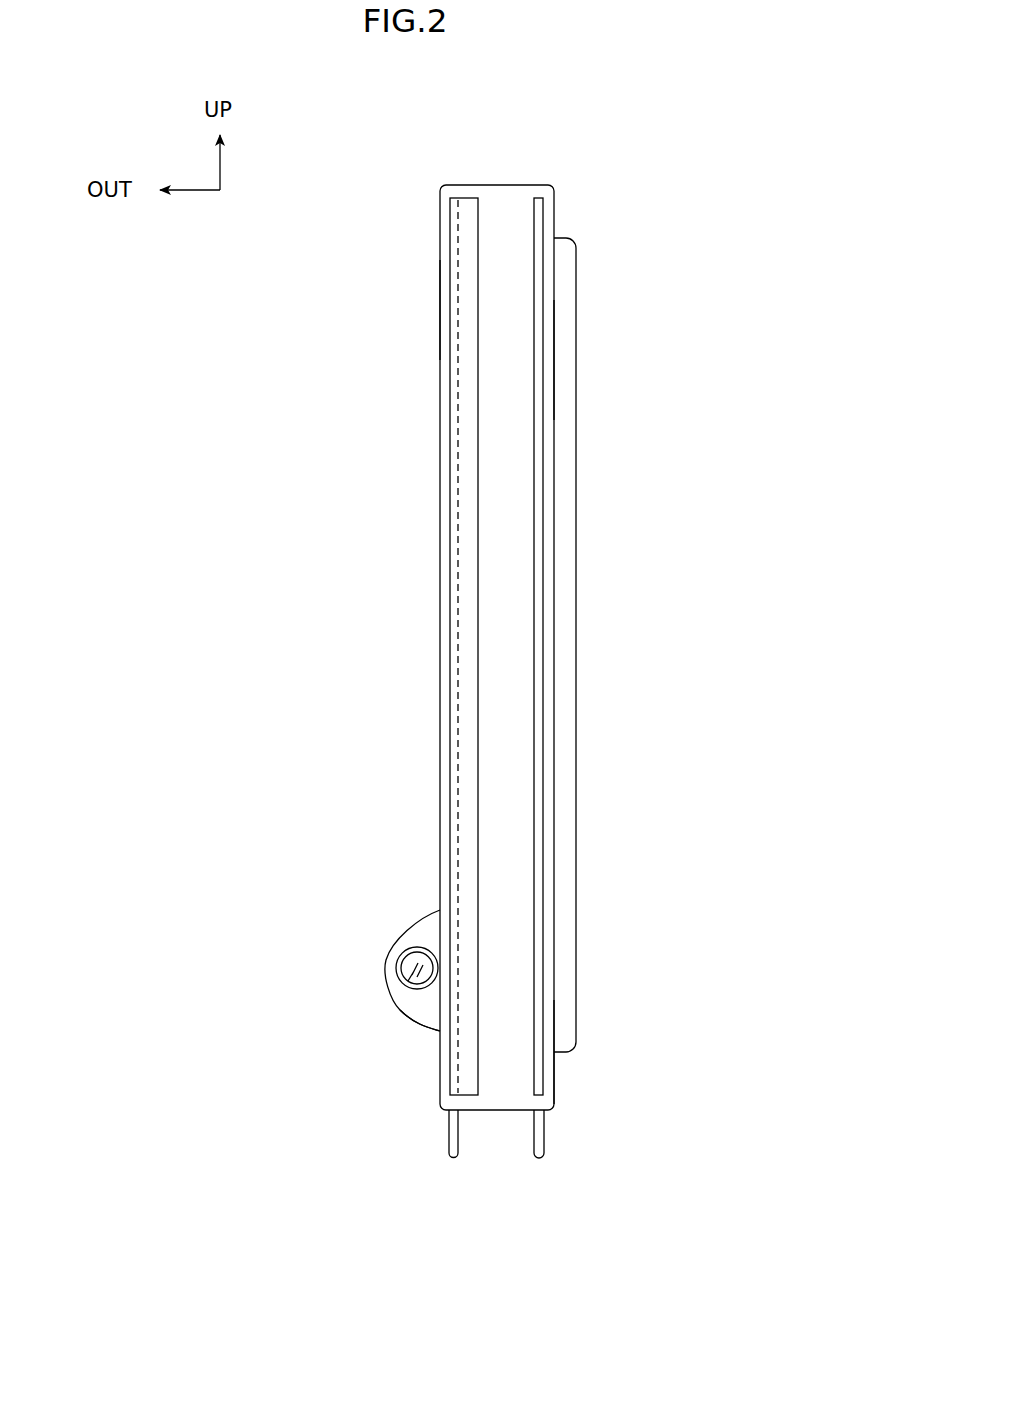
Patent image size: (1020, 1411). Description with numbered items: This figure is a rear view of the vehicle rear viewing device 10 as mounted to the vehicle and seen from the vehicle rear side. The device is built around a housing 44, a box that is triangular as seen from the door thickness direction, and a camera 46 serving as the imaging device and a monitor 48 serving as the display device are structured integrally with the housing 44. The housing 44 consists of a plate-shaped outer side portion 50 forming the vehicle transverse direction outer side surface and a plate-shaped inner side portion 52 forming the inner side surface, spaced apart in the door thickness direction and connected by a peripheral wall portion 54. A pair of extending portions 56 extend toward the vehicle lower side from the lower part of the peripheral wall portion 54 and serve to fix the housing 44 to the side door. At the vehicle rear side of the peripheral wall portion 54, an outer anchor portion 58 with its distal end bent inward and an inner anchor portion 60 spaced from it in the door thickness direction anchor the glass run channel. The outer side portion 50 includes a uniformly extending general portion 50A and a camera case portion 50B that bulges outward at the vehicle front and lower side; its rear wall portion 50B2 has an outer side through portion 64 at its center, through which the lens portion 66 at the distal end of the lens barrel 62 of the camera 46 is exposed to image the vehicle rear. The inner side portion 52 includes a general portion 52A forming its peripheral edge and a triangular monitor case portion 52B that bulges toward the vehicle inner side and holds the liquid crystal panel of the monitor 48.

The vehicle rear viewing device 10 is at (599, 152).
The housing 44 is at (511, 178).
The camera 46 is at (374, 899).
The monitor 48 is at (576, 477).
The outer side portion 50 is at (438, 228).
The general portion 50A is at (440, 308).
The camera case portion 50B is at (386, 943).
The rear wall portion 50B2 is at (425, 1002).
The inner side portion 52 is at (557, 217).
The general portion 52A is at (555, 1082).
The monitor case portion 52B is at (565, 363).
The peripheral wall portion 54 is at (505, 735).
The extending portions 56 is at (452, 1160).
The outer anchor portion 58 is at (470, 587).
The inner anchor portion 60 is at (541, 548).
The lens barrel 62 is at (417, 968).
The outer side through portion 64 is at (418, 947).
The lens portion 66 is at (405, 992).